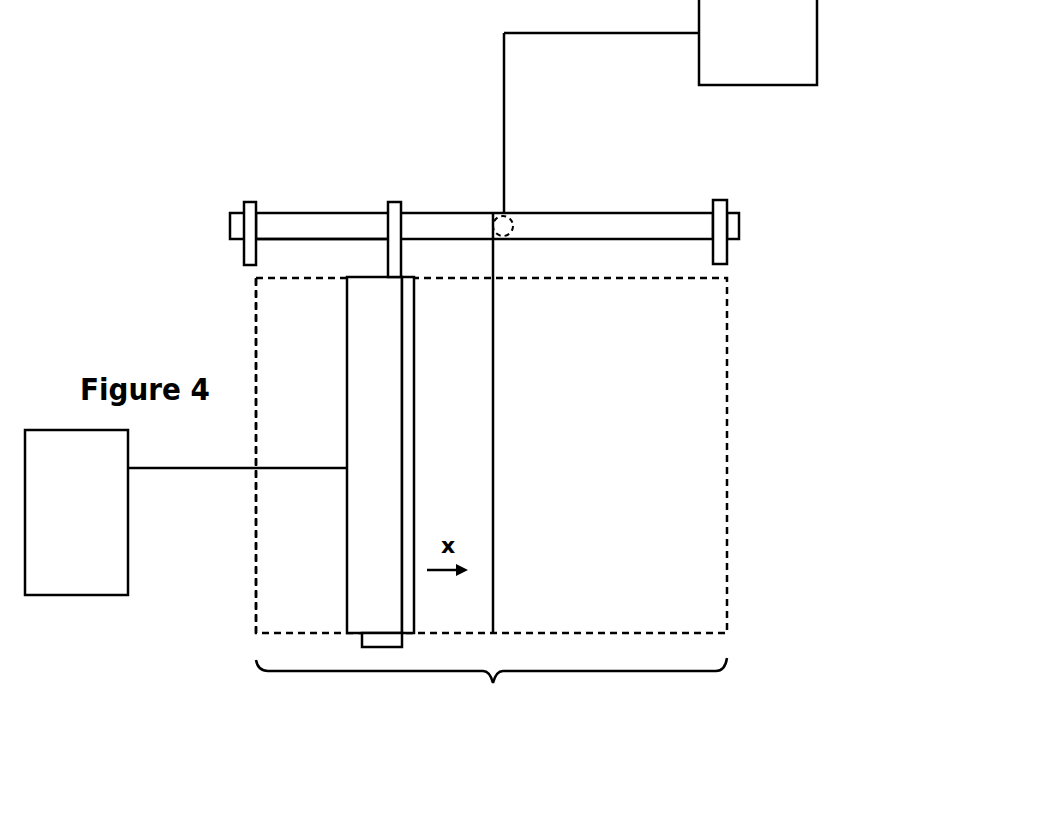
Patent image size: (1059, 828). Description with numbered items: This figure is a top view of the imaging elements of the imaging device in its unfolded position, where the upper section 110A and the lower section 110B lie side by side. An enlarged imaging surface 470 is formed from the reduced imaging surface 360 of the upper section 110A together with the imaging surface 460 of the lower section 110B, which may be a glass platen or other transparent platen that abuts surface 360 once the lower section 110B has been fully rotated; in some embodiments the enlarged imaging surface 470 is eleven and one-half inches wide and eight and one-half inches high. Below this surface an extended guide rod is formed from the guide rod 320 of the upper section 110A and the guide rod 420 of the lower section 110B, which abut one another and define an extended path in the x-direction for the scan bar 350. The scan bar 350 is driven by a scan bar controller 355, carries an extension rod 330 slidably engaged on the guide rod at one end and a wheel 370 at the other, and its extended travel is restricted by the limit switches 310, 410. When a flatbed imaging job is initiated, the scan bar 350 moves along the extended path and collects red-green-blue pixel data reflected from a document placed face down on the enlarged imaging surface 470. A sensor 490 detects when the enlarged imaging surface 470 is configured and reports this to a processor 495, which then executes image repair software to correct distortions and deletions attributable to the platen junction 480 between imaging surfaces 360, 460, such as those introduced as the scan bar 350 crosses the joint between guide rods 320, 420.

The first side frame member 110A is at (216, 265).
The second side frame member 110B is at (752, 262).
The first end flange 310 is at (244, 200).
The lead screw shaft 320 is at (322, 212).
The carriage coupling 330 is at (388, 200).
The scan bar 350 is at (348, 441).
The scan bar controller 355 is at (186, 512).
The scan region boundary 360 is at (257, 582).
The sensor 370 is at (368, 0).
The second end flange 410 is at (712, 200).
The shaft 420 is at (597, 212).
The scan area 460 is at (727, 553).
The scan width 470 is at (491, 692).
The reference position line 480 is at (493, 443).
The encoder 490 is at (465, 212).
The CPU 495 is at (758, 42).